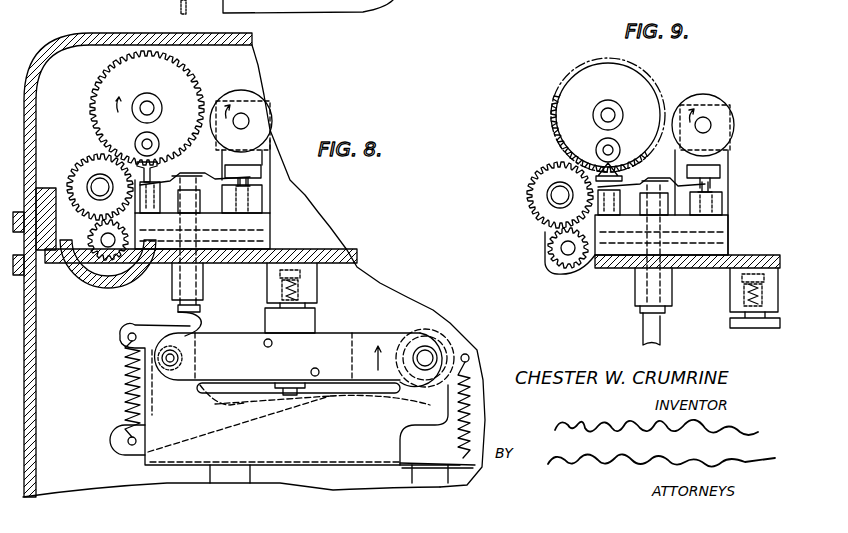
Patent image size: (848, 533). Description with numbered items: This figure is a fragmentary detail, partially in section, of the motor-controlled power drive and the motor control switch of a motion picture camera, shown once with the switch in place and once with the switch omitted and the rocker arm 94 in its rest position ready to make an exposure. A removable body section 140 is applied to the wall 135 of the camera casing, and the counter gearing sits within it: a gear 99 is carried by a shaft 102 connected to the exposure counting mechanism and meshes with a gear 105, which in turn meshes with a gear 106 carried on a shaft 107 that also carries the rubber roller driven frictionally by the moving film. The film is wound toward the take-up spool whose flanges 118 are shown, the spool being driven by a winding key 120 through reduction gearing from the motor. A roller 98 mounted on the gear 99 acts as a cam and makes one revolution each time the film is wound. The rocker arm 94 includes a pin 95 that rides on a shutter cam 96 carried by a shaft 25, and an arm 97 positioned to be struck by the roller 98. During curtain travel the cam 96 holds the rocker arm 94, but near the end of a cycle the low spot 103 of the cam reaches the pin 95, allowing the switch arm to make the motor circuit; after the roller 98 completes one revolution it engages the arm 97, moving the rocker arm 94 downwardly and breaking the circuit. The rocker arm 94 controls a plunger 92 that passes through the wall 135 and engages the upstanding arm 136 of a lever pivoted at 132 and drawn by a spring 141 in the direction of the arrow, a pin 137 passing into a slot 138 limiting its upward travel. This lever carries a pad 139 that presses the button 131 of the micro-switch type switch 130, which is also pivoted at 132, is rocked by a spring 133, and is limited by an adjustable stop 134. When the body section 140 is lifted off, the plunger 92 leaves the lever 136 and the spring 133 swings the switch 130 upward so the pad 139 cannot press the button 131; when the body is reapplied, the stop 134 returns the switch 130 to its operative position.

In FIG. 8, the body section 140 is at (96, 32).
In FIG. 8, the take-up spool flanges 118 is at (180, 10).
In FIG. 8, the winding key 120 is at (293, 11).
In FIG. 8, the gear 99 is at (192, 78).
In FIG. 9, the gear 99 is at (582, 68).
In FIG. 8, the shaft 102 is at (151, 102).
In FIG. 9, the shaft 102 is at (599, 112).
In FIG. 8, the roller 98 is at (158, 141).
In FIG. 9, the roller 98 is at (598, 148).
In FIG. 8, the arm 97 is at (141, 162).
In FIG. 8, the shutter cam 96 is at (262, 102).
In FIG. 9, the shutter cam 96 is at (715, 100).
In FIG. 8, the shaft 25 is at (249, 121).
In FIG. 9, the shaft 25 is at (711, 126).
In FIG. 8, the low spot 103 is at (262, 150).
In FIG. 9, the low spot 103 is at (729, 150).
In FIG. 8, the gear 105 is at (88, 163).
In FIG. 9, the gear 105 is at (545, 172).
In FIG. 8, the gear 106 is at (95, 254).
In FIG. 9, the gear 106 is at (555, 251).
In FIG. 8, the shaft 107 is at (102, 270).
In FIG. 9, the shaft 107 is at (568, 265).
In FIG. 8, the wall of the camera casing 135 is at (30, 345).
In FIG. 9, the wall of the camera casing 135 is at (758, 265).
In FIG. 8, the rocker arm 94 is at (206, 173).
In FIG. 9, the rocker arm 94 is at (650, 180).
In FIG. 8, the pin 95 is at (250, 182).
In FIG. 9, the pin 95 is at (710, 184).
In FIG. 8, the plunger 92 is at (204, 278).
In FIG. 9, the plunger 92 is at (612, 222).
In FIG. 8, the upstanding arm 136 is at (183, 314).
In FIG. 9, the upstanding arm 136 is at (643, 322).
In FIG. 8, the adjustable stop 134 is at (301, 298).
In FIG. 9, the adjustable stop 134 is at (750, 300).
In FIG. 8, the switch 130 is at (374, 333).
In FIG. 8, the pivot 132 is at (431, 352).
In FIG. 8, the pin 137 is at (178, 357).
In FIG. 8, the slot 138 is at (180, 368).
In FIG. 8, the button 131 is at (294, 382).
In FIG. 8, the pad 139 is at (297, 396).
In FIG. 8, the spring 141 is at (124, 396).
In FIG. 8, the spring 133 is at (472, 398).